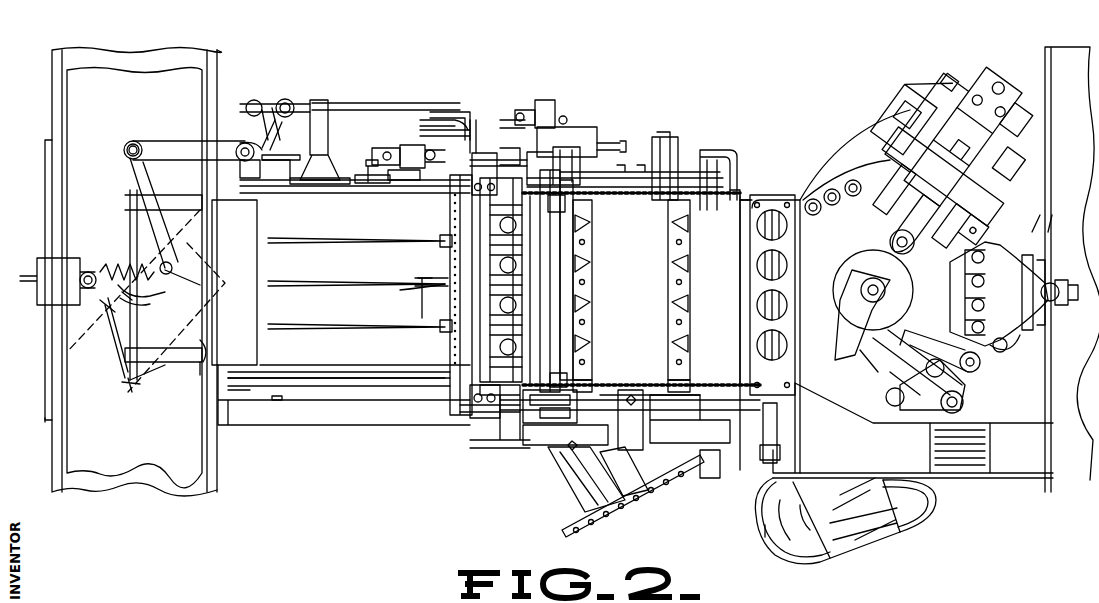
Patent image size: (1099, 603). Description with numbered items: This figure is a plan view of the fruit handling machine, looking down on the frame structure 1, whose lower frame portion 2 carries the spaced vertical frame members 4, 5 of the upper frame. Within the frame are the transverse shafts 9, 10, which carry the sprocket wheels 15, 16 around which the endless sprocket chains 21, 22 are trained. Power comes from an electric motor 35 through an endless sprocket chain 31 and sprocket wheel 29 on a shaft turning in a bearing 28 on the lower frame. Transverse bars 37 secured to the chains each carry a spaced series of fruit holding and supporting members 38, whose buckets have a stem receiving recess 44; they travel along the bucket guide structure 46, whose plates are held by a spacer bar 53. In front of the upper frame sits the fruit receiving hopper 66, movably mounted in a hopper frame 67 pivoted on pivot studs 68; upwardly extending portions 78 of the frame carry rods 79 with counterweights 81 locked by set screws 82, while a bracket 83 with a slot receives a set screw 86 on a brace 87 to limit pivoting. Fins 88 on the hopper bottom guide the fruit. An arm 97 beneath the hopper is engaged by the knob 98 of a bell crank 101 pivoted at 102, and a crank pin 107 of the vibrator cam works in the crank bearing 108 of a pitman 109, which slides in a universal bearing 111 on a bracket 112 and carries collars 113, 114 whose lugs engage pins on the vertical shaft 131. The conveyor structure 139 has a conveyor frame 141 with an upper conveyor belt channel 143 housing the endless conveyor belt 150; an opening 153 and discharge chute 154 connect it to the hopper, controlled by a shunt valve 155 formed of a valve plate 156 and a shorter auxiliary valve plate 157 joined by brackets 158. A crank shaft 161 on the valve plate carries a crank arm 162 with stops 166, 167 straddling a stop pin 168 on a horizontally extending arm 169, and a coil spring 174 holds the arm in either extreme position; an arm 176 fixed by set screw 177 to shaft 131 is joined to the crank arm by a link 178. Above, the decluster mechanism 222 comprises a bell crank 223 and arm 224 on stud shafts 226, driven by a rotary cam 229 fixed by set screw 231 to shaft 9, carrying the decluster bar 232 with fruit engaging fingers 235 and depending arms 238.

The frame structure 1 is at (411, 446).
The lower frame portion 2 is at (318, 427).
The frame member 4 is at (833, 300).
The frame member 5 is at (518, 118).
The transverse shaft 9 is at (565, 318).
The transverse shaft 10 is at (720, 200).
The sprocket wheel 15 is at (552, 195).
The sprocket wheel 16 is at (712, 185).
The endless sprocket chain 21 is at (602, 388).
The endless sprocket chain 22 is at (620, 198).
The bearing 28 is at (580, 508).
The sprocket wheel 29 is at (592, 525).
The endless sprocket chain 31 is at (700, 478).
The electric motor 35 is at (770, 512).
The transverse bar 37 is at (592, 262).
The fruit holding and supporting member 38 is at (515, 257).
The stem receiving recess 44 is at (578, 265).
The bucket guide structure 46 is at (478, 418).
The spacer bar 53 is at (470, 352).
The fruit receiving hopper 66 is at (372, 388).
The hopper frame 67 is at (252, 388).
The pivot stud 68 is at (480, 150).
The upwardly extending portion 78 is at (510, 148).
The rod 79 is at (605, 143).
The counterweight 81 is at (592, 127).
The set screw 82 is at (566, 116).
The bracket 83 is at (375, 183).
The set screw 86 is at (366, 159).
The brace 87 is at (296, 166).
The fin 88 is at (378, 243).
The arm 97 is at (400, 182).
The knob 98 is at (386, 150).
The bell crank 101 is at (462, 112).
The pivot 102 is at (428, 148).
The crank pin 107 is at (545, 100).
The crank bearing 108 is at (522, 108).
The pitman 109 is at (372, 105).
The universal bearing 111 is at (330, 100).
The bracket 112 is at (310, 185).
The collar 113 is at (290, 98).
The collar 114 is at (262, 100).
The vertical shaft 131 is at (215, 148).
The conveyor structure 139 is at (33, 359).
The conveyor frame 141 is at (45, 188).
The upper conveyor belt channel 143 is at (52, 112).
The endless conveyor belt 150 is at (182, 101).
The opening 153 is at (208, 210).
The discharge chute 154 is at (242, 257).
The shunt valve 155 is at (125, 205).
The valve plate 156 is at (128, 376).
The auxiliary valve plate 157 is at (200, 365).
The bracket 158 is at (172, 225).
The crank shaft 161 is at (150, 291).
The crank arm 162 is at (170, 271).
The stop 166 is at (95, 290).
The stop 167 is at (125, 305).
The stop pin 168 is at (110, 330).
The horizontally extending arm 169 is at (108, 304).
The coil spring 174 is at (115, 268).
The arm 176 is at (150, 140).
The set screw 177 is at (279, 135).
The link 178 is at (133, 164).
The decluster mechanism 222 is at (443, 220).
The bell crank 223 is at (470, 420).
The arm 224 is at (472, 120).
The stud shaft 226 is at (550, 135).
The rotary cam 229 is at (600, 440).
The set screw 231 is at (575, 465).
The decluster bar 232 is at (448, 265).
The fruit engaging finger 235 is at (410, 290).
The depending arm 238 is at (440, 238).